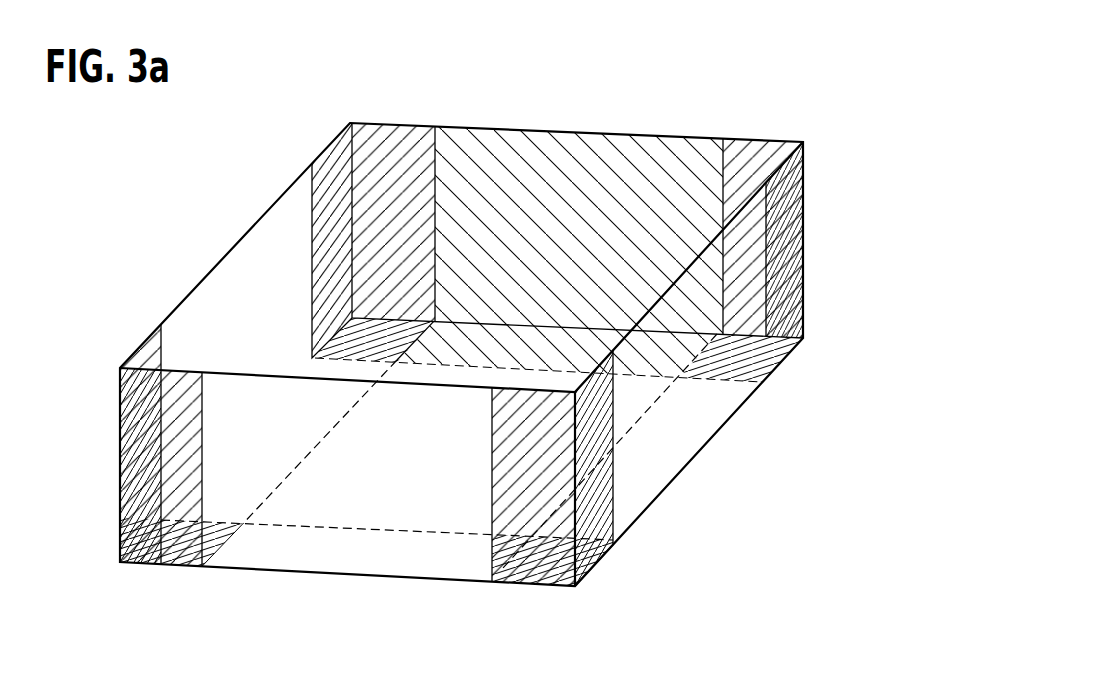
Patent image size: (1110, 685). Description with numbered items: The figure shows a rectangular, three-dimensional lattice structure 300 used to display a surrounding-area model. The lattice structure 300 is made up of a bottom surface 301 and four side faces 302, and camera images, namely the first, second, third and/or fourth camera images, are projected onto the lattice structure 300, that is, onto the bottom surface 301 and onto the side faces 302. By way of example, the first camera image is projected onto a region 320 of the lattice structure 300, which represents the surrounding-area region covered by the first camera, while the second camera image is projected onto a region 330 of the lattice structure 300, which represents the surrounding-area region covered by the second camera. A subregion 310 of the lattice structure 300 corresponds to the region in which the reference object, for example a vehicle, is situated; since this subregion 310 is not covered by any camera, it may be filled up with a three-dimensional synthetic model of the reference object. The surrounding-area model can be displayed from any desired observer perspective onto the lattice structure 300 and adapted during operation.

The three-dimensional lattice structure 300 is at (726, 75).
The bottom surface 301 is at (437, 370).
The side faces 302 is at (483, 179).
The subregion 310 is at (446, 468).
The region 320 is at (563, 180).
The region 330 is at (747, 263).